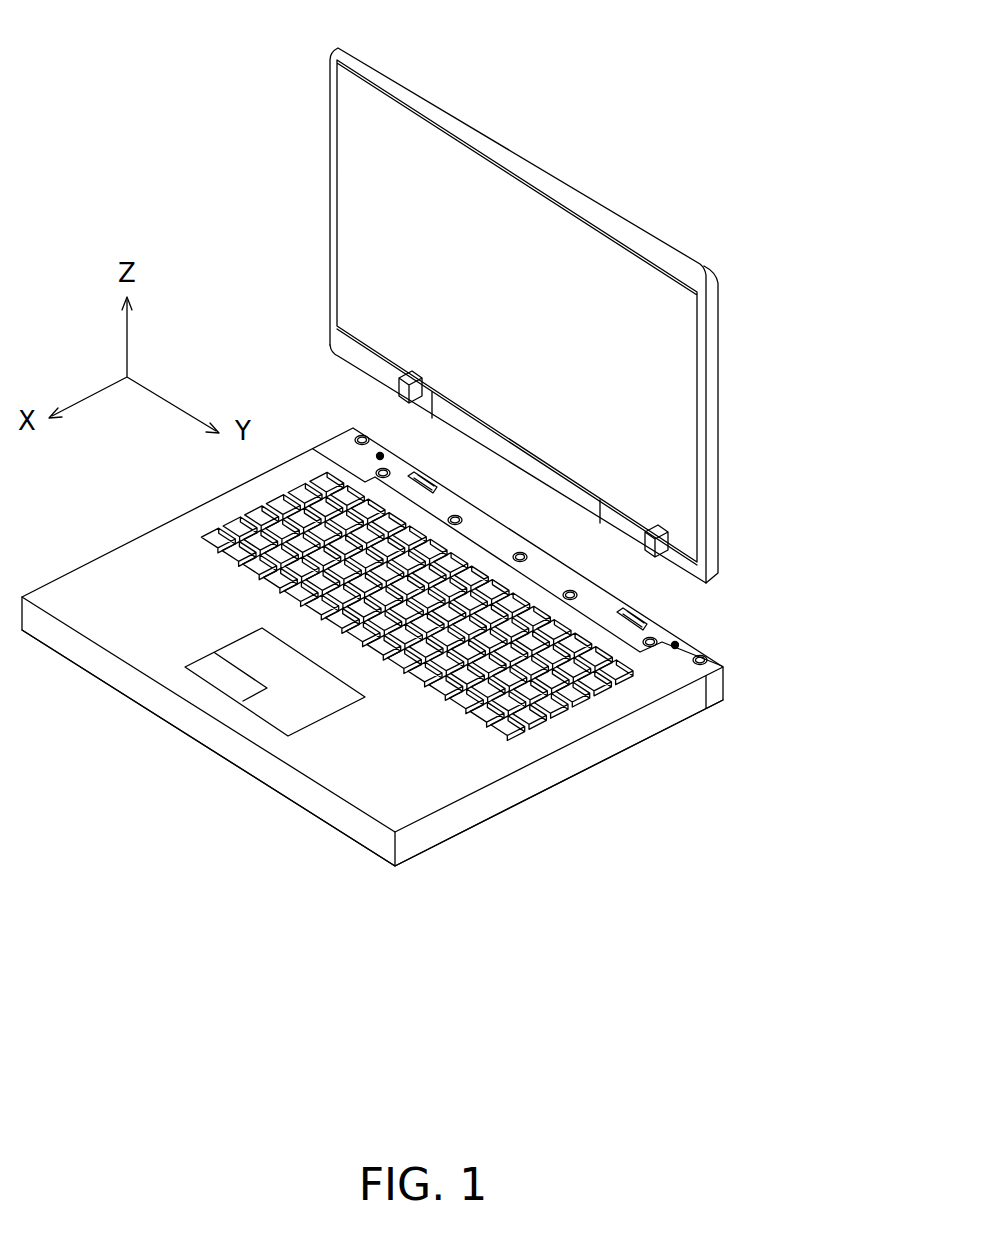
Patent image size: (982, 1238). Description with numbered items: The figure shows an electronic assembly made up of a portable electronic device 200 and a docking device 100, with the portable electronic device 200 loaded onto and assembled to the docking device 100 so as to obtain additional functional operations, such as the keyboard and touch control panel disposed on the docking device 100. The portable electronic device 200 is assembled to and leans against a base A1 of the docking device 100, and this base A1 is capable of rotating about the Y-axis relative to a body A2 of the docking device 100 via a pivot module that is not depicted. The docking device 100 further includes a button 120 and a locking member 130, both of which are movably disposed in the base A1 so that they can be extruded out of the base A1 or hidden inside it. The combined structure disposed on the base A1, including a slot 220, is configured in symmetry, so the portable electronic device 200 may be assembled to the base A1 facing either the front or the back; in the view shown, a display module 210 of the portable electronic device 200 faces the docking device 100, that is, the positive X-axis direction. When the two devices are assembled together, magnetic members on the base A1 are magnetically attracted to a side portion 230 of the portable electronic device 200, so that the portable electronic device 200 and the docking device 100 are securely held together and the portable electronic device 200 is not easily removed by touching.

The docking device 100 is at (415, 711).
The button 120 is at (680, 643).
The locking member 130 is at (645, 613).
The portable electronic device 200 is at (462, 302).
The display module 210 is at (357, 178).
The slot 220 is at (655, 528).
The side portion 230 is at (500, 453).
The base A1 is at (625, 628).
The body A2 is at (652, 861).